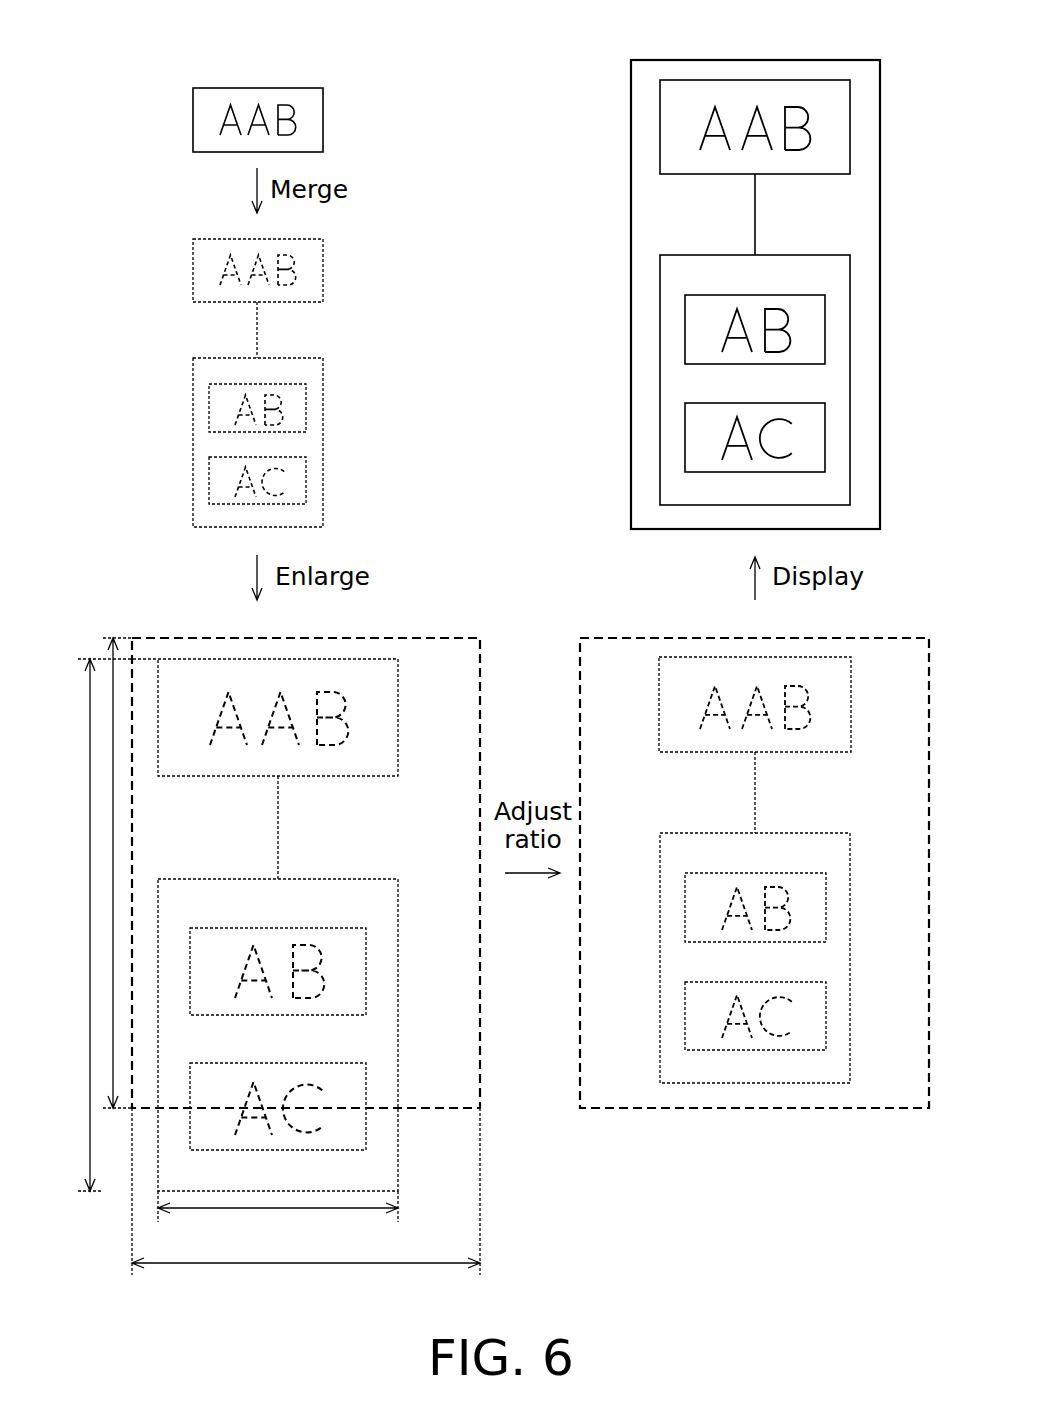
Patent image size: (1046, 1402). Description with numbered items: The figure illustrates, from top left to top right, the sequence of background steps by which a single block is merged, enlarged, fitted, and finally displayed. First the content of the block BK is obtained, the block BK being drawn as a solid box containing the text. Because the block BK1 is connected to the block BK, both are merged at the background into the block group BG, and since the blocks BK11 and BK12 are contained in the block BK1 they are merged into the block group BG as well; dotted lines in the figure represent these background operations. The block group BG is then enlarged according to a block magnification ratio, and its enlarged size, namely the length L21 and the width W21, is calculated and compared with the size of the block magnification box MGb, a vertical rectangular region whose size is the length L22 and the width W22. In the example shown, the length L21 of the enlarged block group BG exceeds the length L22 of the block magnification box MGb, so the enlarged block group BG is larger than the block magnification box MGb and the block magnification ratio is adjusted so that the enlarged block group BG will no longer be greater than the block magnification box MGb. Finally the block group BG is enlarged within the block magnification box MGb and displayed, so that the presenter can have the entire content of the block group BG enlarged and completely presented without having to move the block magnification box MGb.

The block BK is at (323, 120).
The block group BG is at (348, 270).
The block BK1 is at (323, 440).
The block BK11 is at (306, 404).
The block BK12 is at (306, 480).
The block magnification box MGb is at (836, 60).
The length L21 is at (90, 687).
The length L22 is at (113, 678).
The width W21 is at (278, 1214).
The width W22 is at (306, 1202).